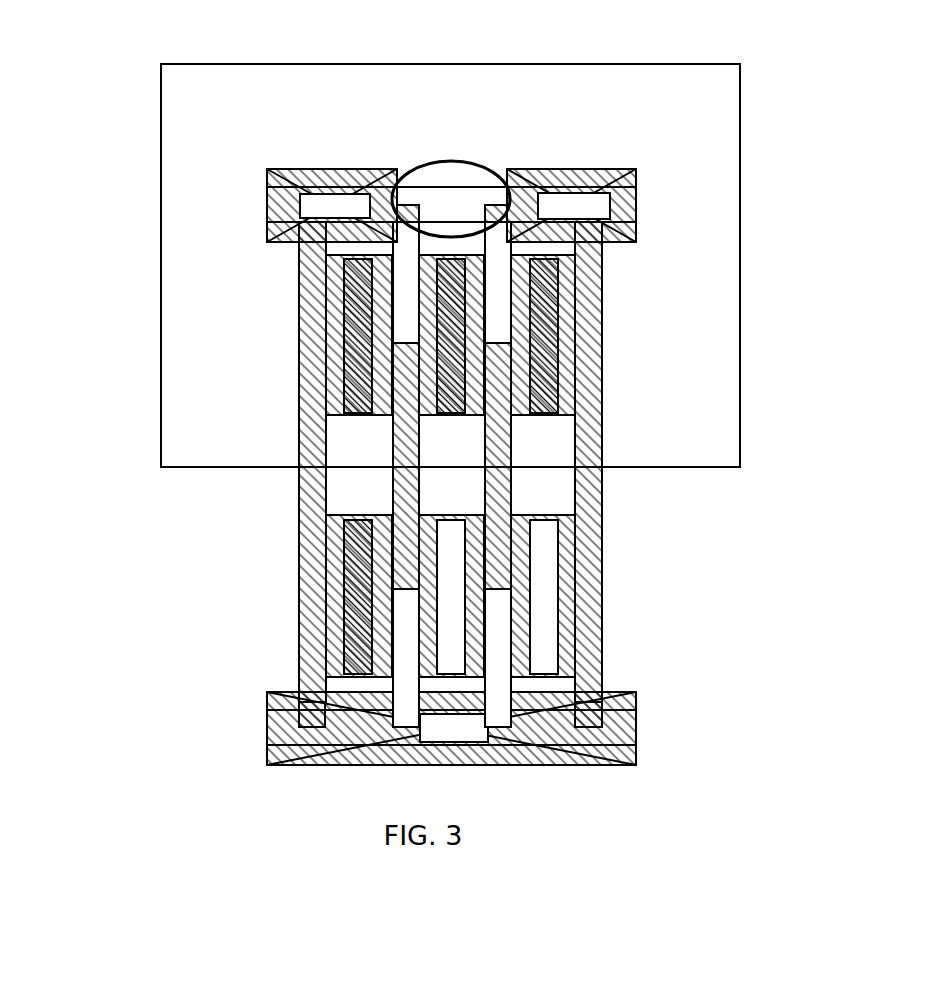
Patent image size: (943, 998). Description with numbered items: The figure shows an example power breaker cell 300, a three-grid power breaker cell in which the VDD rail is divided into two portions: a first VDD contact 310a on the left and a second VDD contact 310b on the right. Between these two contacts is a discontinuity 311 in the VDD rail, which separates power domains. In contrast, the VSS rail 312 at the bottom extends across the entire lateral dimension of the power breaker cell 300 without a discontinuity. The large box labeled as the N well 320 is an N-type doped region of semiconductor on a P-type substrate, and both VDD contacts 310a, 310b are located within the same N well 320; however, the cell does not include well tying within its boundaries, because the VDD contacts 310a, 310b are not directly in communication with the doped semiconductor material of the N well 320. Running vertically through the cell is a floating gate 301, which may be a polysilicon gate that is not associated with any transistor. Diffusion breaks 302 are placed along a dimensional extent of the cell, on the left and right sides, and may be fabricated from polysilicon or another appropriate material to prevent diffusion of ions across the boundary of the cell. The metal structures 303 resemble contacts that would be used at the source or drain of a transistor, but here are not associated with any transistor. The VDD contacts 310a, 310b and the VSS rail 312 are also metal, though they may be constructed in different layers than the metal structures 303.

The power breaker cell 300 is at (684, 530).
The floating gate 301 is at (484, 503).
The diffusion breaks 302 is at (573, 448).
The metal structures 303 is at (527, 385).
The first VDD contact 310a is at (266, 201).
The second VDD contact 310b is at (638, 221).
The discontinuity 311 is at (448, 161).
The VSS rail 312 is at (638, 724).
The N well 320 is at (740, 311).